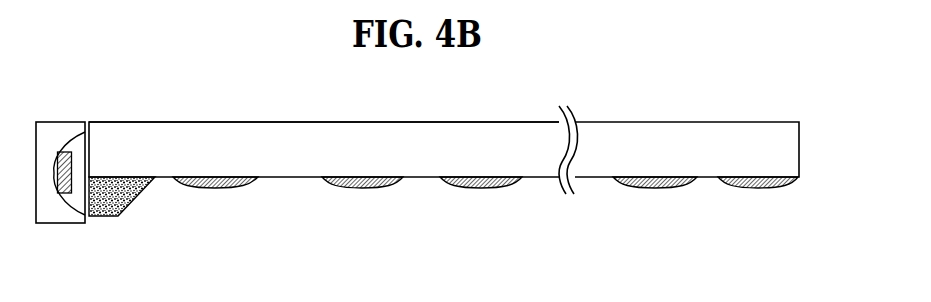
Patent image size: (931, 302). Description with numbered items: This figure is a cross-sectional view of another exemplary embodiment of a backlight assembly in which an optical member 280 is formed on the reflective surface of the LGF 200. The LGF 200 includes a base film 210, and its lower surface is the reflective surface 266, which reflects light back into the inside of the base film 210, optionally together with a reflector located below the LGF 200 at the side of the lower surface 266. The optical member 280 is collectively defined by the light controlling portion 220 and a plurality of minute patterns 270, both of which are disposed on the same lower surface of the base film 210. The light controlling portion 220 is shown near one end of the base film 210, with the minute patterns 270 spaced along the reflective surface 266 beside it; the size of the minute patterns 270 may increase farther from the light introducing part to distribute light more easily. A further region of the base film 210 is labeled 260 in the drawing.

The LGF 200 is at (444, 130).
The base film 210 is at (703, 139).
The light controlling portion 220 is at (130, 207).
The light guide plate upper surface layer 260 is at (188, 140).
The reflective surface 266 is at (422, 178).
The minute pattern 270 is at (215, 217).
The optical member 280 is at (173, 234).